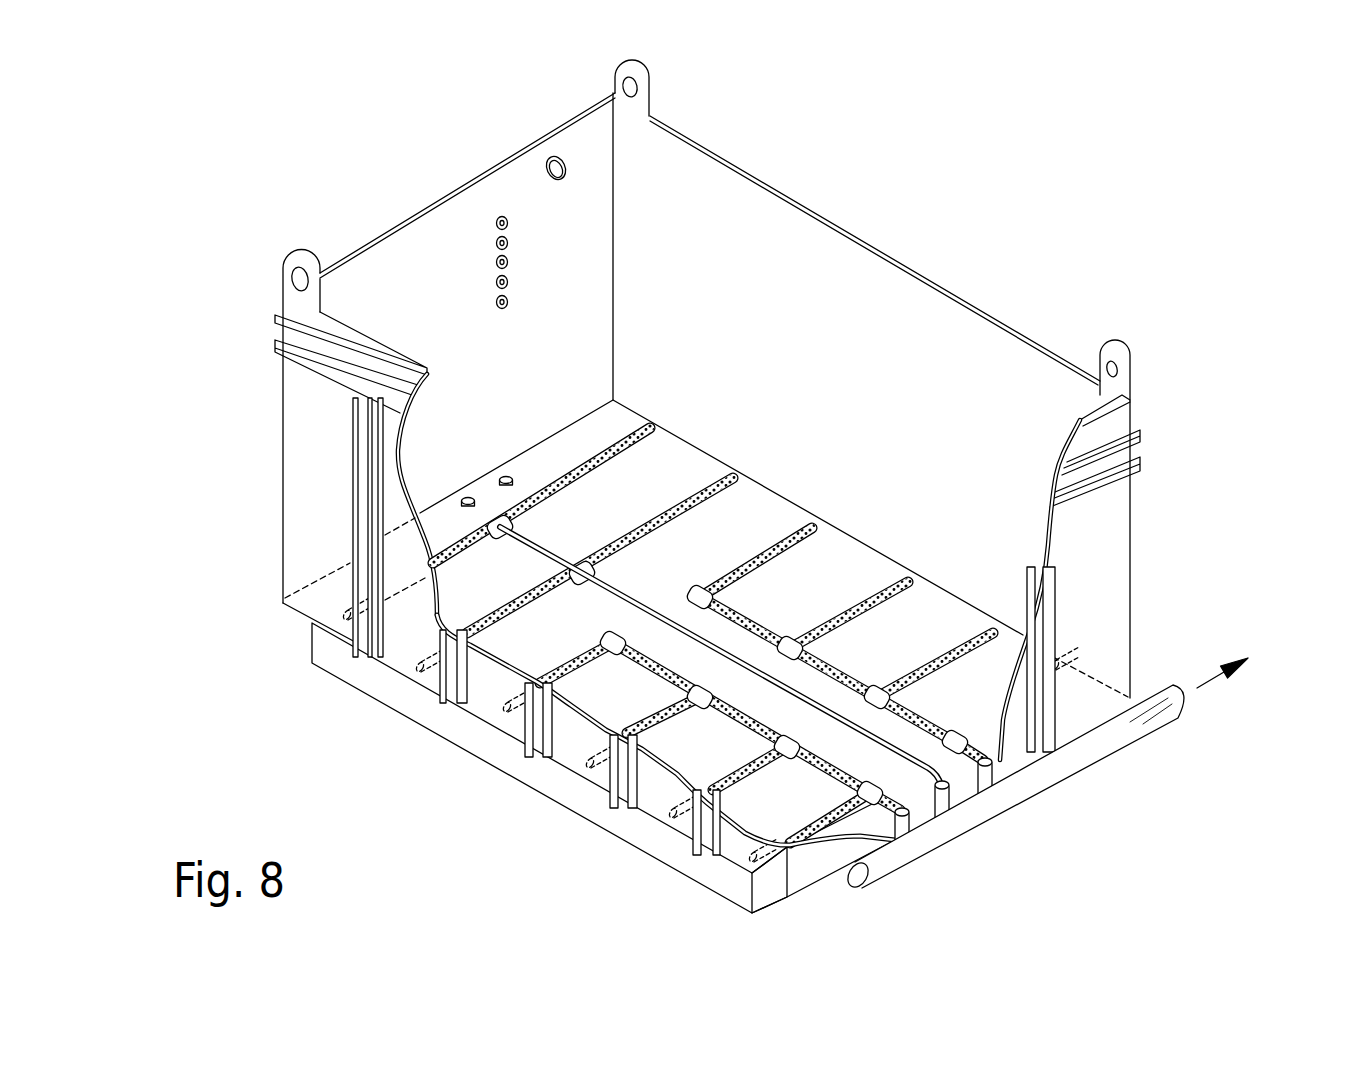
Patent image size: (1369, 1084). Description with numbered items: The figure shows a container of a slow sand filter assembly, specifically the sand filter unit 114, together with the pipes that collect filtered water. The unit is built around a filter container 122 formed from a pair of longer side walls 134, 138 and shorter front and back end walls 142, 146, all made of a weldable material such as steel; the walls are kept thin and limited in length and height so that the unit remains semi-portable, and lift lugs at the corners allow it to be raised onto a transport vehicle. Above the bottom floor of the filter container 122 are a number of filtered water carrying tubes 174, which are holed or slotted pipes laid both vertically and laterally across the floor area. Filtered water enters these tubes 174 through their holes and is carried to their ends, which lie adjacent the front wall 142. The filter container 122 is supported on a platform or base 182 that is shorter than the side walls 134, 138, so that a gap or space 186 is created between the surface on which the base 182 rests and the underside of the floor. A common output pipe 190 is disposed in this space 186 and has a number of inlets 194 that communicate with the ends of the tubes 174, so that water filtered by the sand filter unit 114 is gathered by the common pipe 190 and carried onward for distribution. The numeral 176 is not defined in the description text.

The sand filter unit 114 is at (998, 241).
The filter container 122 is at (280, 567).
The side wall 134 is at (310, 445).
The side wall 138 is at (968, 330).
The front end wall 142 is at (1085, 553).
The back end wall 146 is at (433, 422).
The filtered water carrying tubes 174 is at (519, 626).
The supply hose 176 is at (787, 805).
The platform or base 182 is at (700, 866).
The gap or space 186 is at (772, 900).
The common output pipe 190 is at (1068, 765).
The inlets 194 is at (905, 848).